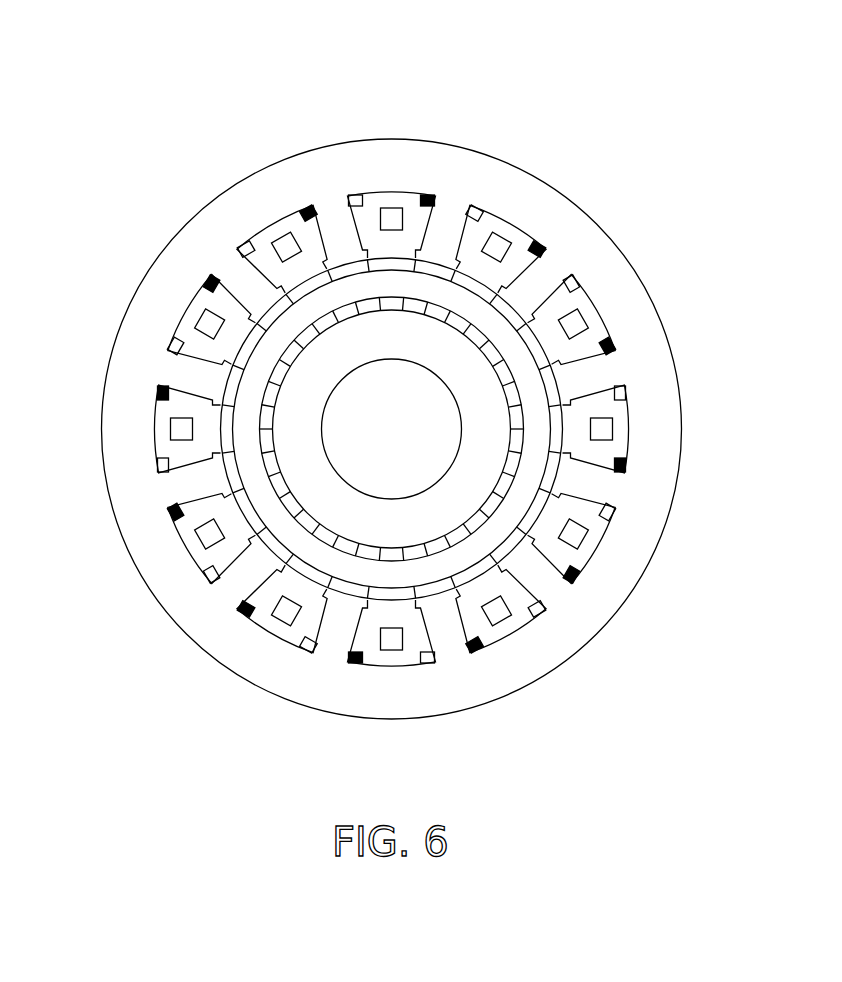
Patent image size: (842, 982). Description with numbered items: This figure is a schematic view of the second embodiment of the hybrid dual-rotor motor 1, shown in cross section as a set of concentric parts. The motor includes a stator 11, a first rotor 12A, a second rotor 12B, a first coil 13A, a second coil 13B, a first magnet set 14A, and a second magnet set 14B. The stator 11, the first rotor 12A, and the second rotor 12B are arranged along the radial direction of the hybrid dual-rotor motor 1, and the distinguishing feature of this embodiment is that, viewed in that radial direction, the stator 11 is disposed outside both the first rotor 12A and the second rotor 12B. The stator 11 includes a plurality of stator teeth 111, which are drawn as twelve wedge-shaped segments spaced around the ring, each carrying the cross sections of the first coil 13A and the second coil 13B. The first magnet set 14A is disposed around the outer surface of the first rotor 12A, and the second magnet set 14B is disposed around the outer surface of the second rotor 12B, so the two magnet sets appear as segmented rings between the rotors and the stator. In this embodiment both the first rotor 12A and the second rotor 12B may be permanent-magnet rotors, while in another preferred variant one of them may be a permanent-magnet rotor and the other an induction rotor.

The hybrid dual-rotor motor 1 is at (51, 36).
The stator 11 is at (203, 238).
The stator teeth 111 is at (325, 210).
The first coil 13A is at (393, 222).
The second coil 13B is at (432, 197).
The first rotor 12A is at (488, 323).
The second rotor 12B is at (475, 416).
The first magnet set 14A is at (557, 467).
The second magnet set 14B is at (478, 518).